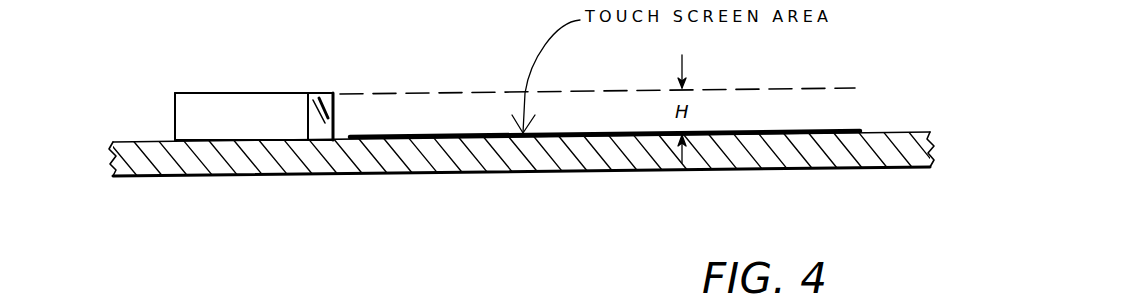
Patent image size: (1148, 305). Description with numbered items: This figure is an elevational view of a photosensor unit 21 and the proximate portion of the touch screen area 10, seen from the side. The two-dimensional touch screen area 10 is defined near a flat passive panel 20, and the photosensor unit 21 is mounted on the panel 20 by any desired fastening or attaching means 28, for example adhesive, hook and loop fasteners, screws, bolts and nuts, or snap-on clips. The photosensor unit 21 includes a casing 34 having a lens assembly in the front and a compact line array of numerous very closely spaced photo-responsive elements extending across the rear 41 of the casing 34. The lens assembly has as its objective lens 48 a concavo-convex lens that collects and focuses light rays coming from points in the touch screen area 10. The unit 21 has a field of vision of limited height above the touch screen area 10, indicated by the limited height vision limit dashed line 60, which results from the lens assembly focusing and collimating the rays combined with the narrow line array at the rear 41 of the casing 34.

The touch screen area 10 is at (567, 131).
The flat passive panel 20 is at (498, 202).
The photosensor unit 21 is at (246, 74).
The fastening or attaching means 28 is at (208, 177).
The casing 34 is at (268, 93).
The rear of the casing 41 is at (172, 118).
The objective lens 48 is at (324, 100).
The limited height vision limit dashed line 60 is at (760, 87).